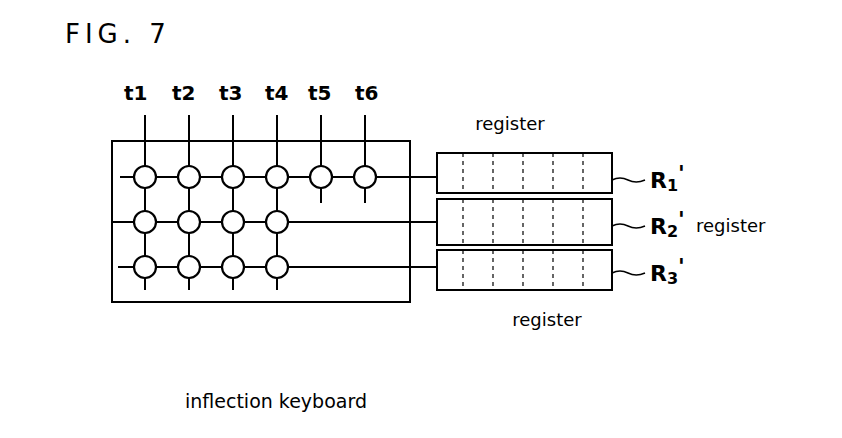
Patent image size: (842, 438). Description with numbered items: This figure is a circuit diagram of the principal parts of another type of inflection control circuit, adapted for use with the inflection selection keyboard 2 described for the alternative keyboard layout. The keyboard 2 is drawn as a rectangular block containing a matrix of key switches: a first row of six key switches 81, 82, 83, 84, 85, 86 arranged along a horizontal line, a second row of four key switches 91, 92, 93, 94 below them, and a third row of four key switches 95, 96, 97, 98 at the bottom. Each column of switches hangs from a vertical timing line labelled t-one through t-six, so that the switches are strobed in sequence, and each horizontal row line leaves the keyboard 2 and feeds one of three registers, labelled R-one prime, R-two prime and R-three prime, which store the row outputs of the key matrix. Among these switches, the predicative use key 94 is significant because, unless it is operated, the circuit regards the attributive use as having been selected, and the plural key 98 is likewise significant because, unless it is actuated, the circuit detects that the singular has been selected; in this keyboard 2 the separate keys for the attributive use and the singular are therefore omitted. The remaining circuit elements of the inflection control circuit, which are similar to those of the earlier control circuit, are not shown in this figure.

The inflection selection keyboard 2 is at (168, 302).
The key switch 81 is at (137, 168).
The key switch 82 is at (181, 168).
The key switch 83 is at (226, 168).
The key switch 84 is at (270, 168).
The key switch 85 is at (314, 168).
The key switch 86 is at (358, 168).
The key switch 91 is at (135, 229).
The key switch 92 is at (182, 229).
The key switch 93 is at (239, 229).
The predicative use key 94 is at (285, 229).
The key switch 95 is at (137, 276).
The key switch 96 is at (197, 276).
The key switch 97 is at (241, 276).
The plural key 98 is at (285, 276).